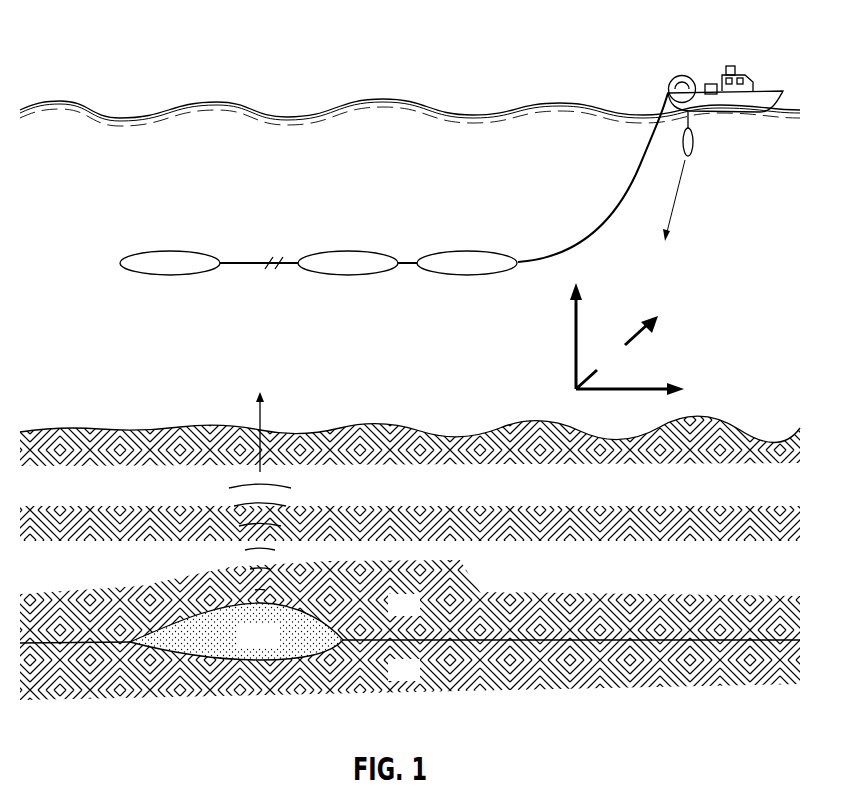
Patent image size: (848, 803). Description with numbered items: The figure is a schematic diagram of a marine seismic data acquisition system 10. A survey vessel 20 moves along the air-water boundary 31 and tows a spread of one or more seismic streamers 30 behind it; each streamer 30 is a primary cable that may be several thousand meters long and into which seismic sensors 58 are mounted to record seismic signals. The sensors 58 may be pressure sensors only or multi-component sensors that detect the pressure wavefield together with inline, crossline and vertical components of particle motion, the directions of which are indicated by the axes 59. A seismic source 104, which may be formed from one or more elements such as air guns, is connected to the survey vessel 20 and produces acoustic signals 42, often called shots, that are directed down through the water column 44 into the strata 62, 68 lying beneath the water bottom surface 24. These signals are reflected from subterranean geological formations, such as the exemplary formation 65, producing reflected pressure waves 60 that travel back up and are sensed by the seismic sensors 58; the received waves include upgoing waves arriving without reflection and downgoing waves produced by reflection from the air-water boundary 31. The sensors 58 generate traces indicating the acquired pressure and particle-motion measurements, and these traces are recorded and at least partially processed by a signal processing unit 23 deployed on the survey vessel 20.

The marine seismic data acquisition system 10 is at (206, 66).
The survey vessel 20 is at (778, 90).
The signal processing unit 23 is at (710, 84).
The water bottom surface 24 is at (690, 428).
The seismic streamer 30 is at (630, 178).
The air-water boundary 31 is at (362, 99).
The acoustic signal 42 is at (676, 208).
The water column 44 is at (410, 270).
The seismic sensor 58 is at (178, 251).
The axes 59 is at (562, 397).
The pressure waves 60 is at (222, 557).
The strata 62 is at (410, 601).
The formation 65 is at (236, 631).
The strata 68 is at (410, 670).
The seismic source 104 is at (697, 142).